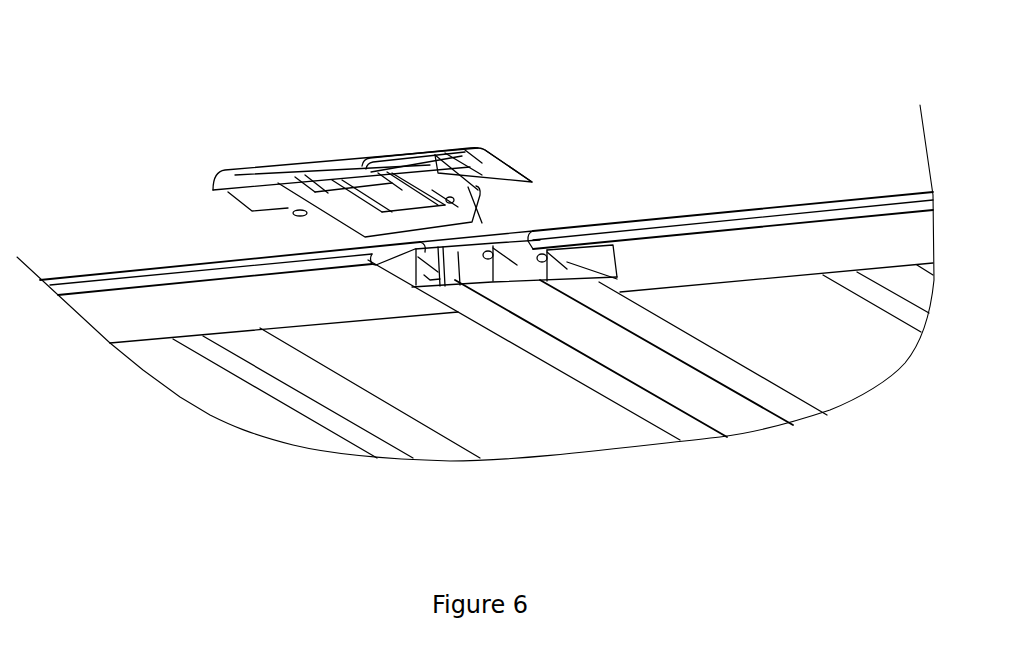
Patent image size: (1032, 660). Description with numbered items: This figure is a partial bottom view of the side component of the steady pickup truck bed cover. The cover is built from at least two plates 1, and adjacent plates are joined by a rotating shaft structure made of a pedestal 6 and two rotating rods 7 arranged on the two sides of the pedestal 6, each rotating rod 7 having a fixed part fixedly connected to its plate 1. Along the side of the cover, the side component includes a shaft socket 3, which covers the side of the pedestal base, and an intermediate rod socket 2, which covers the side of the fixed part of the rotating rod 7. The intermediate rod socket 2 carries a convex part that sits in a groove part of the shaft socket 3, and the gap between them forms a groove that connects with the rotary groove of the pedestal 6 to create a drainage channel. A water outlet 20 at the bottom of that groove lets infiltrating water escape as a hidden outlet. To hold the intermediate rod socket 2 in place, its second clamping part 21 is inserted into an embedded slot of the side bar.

The plate 1 is at (815, 353).
The intermediate rod socket 2 is at (407, 158).
The shaft socket 3 is at (337, 165).
The pedestal 6 is at (713, 410).
The rotating rod 7 is at (643, 402).
The water outlet 20 is at (305, 193).
The second clamping part 21 is at (493, 165).